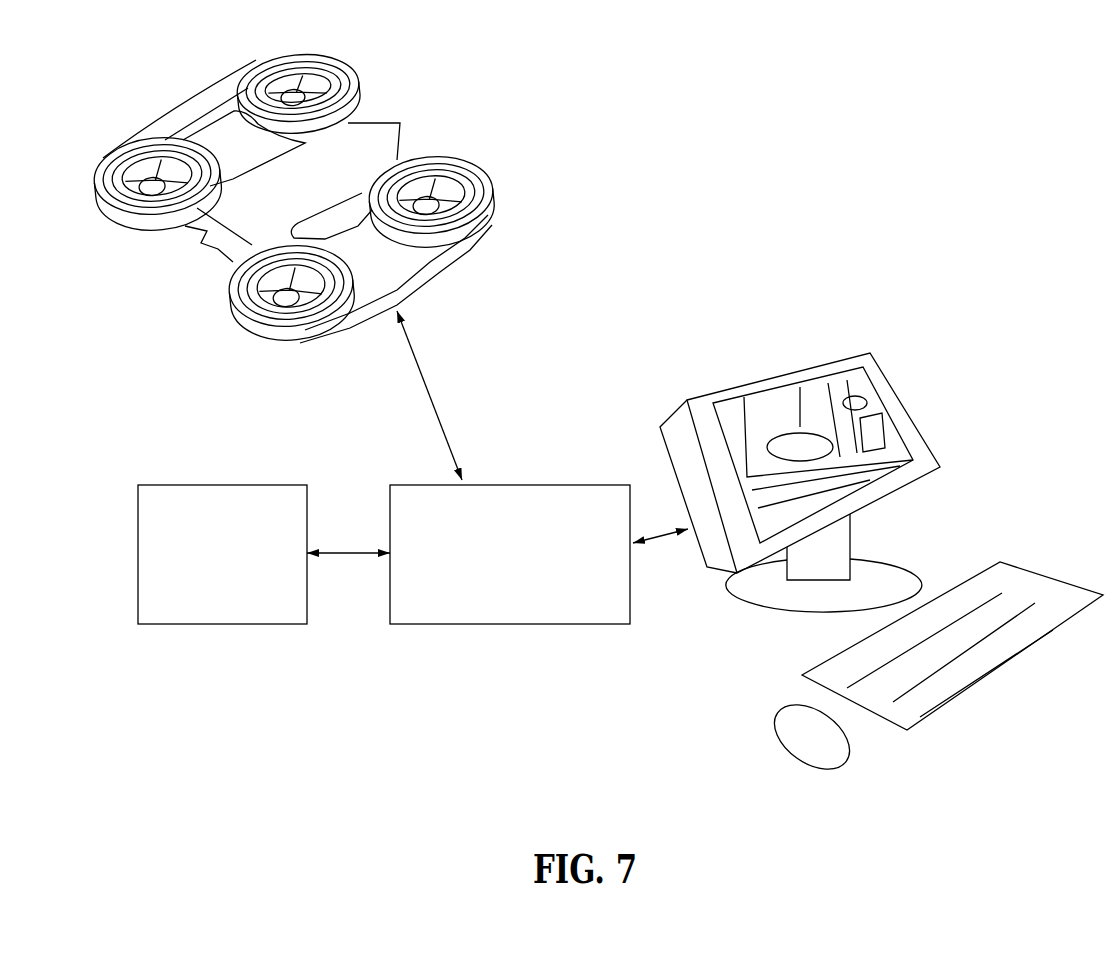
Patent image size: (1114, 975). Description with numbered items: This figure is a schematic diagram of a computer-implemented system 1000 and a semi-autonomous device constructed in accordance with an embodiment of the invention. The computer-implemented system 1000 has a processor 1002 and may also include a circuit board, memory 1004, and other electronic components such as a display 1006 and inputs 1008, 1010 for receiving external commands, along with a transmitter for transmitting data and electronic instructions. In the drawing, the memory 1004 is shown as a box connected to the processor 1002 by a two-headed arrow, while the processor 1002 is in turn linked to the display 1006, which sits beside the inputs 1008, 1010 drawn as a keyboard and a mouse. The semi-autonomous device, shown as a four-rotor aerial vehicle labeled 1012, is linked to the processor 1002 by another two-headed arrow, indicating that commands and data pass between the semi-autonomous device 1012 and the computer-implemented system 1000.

The computer-implemented system 1000 is at (594, 262).
The processor 1002 is at (513, 624).
The memory 1004 is at (230, 624).
The display 1006 is at (747, 378).
The input 1008 is at (907, 730).
The input 1010 is at (845, 757).
The unmanned aerial vehicle 1012 is at (214, 251).